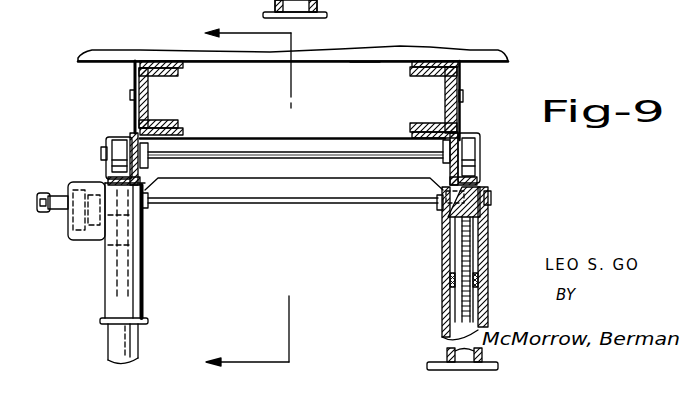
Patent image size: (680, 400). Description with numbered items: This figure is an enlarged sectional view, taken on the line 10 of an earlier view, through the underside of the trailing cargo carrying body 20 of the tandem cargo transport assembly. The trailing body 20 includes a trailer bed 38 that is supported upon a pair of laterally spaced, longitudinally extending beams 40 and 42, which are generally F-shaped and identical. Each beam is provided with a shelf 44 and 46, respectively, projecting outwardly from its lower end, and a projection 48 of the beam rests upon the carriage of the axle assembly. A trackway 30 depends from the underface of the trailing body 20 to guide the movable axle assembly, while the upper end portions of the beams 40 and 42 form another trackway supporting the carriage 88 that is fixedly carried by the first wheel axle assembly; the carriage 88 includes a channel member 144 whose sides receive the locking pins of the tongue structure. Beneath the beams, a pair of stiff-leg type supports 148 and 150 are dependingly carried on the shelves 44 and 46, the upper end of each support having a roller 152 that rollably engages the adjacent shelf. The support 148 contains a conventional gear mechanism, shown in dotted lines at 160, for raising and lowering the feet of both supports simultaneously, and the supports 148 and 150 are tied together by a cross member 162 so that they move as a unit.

The section line 10- 10 is at (243, 185).
The trailing cargo carrying body 20 is at (397, 44).
The trackway 30 is at (478, 76).
The trailer bed 38 is at (364, 59).
The beam 40 is at (128, 80).
The beam 42 is at (466, 111).
The shelf 44 is at (118, 180).
The shelf 46 is at (476, 175).
The projection 48 is at (186, 131).
The carriage 88 is at (153, 94).
The channel member 144 is at (165, 119).
The support 148 is at (144, 267).
The support 150 is at (444, 268).
The roller 152 is at (474, 136).
The gear mechanism 160 is at (92, 243).
The cross member 162 is at (333, 141).